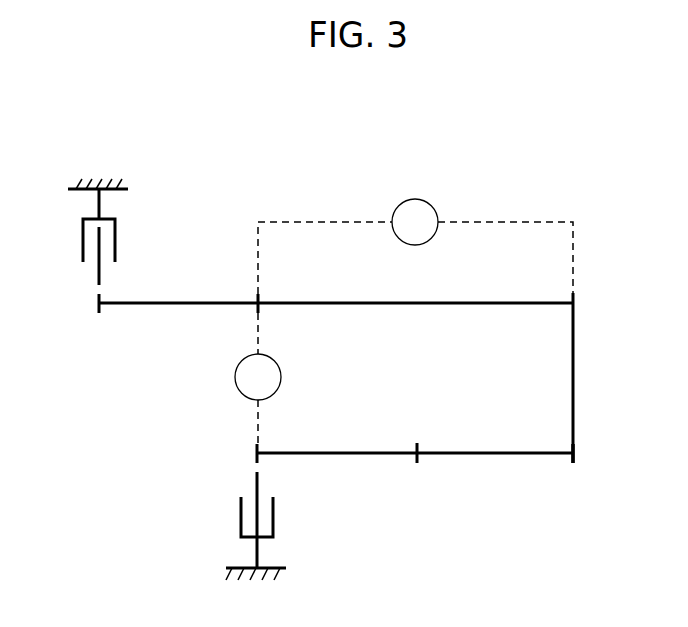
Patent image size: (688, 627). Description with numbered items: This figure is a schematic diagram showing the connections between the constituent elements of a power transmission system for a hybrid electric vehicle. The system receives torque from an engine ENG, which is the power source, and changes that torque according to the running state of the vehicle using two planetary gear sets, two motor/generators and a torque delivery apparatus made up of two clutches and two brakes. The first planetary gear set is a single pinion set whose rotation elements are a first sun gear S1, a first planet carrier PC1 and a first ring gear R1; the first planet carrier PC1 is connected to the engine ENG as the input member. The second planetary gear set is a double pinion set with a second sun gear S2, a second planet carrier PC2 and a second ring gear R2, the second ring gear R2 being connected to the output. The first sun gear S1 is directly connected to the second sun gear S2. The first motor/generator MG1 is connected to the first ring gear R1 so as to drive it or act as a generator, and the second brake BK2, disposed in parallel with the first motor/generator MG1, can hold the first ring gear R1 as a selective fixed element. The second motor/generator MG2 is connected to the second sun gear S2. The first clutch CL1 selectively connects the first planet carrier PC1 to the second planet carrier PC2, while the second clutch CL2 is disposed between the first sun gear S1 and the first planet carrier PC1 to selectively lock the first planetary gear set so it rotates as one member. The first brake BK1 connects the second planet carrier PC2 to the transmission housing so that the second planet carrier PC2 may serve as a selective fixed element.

The second brake BK2 is at (80, 220).
The first motor/generator MG1 is at (126, 264).
The first ring gear R1 is at (99, 320).
The engine ENG is at (336, 287).
The first planet carrier PC1 is at (282, 316).
The first sun gear S1 is at (590, 378).
The first clutch CL1 is at (258, 379).
The second clutch CL2 is at (415, 246).
The second planet carrier PC2 is at (415, 467).
The second ring gear R2 is at (432, 467).
The second sun gear S2 is at (590, 467).
The second motor/generator MG2 is at (599, 483).
The first brake BK1 is at (274, 526).